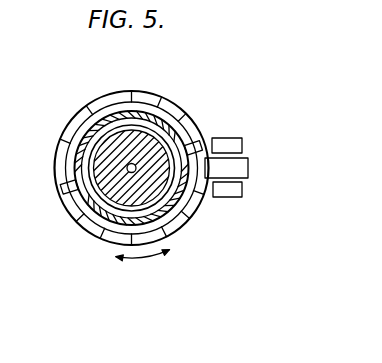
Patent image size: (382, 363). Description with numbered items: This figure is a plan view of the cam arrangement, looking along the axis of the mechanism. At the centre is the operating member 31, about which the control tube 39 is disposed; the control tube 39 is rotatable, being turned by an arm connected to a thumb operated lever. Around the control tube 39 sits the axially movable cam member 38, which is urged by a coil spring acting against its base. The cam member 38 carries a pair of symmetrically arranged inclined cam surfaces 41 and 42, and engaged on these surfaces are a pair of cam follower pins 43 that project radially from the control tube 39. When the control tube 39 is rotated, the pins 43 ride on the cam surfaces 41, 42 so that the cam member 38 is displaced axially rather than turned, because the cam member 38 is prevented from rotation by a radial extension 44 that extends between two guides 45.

The operating member 31 is at (94, 225).
The cam member 38 is at (186, 121).
The control tube 39 is at (166, 99).
The inclined cam surface 41 is at (98, 105).
The inclined cam surface 42 is at (187, 212).
The cam follower pins 43 is at (197, 143).
The radial extension 44 is at (247, 163).
The guides 45 is at (240, 142).